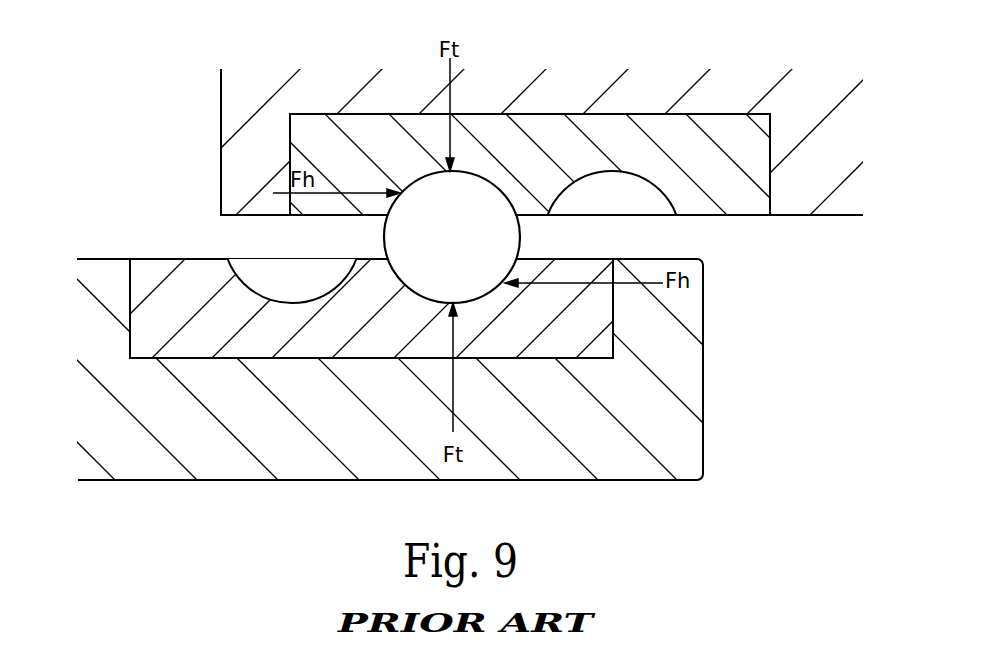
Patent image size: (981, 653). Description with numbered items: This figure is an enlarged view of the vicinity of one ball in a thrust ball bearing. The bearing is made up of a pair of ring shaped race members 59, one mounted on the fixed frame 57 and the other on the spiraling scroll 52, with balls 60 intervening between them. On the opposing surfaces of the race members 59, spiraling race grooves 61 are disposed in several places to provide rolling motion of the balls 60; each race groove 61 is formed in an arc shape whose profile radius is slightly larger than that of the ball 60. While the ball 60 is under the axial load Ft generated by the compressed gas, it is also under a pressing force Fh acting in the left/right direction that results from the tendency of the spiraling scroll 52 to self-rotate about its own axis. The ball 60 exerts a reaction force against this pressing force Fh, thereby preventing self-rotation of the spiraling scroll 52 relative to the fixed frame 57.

The spiraling scroll 52 is at (825, 198).
The fixed frame 57 is at (252, 481).
The race member 59 is at (557, 313).
The ball 60 is at (480, 202).
The race groove 61 is at (292, 277).